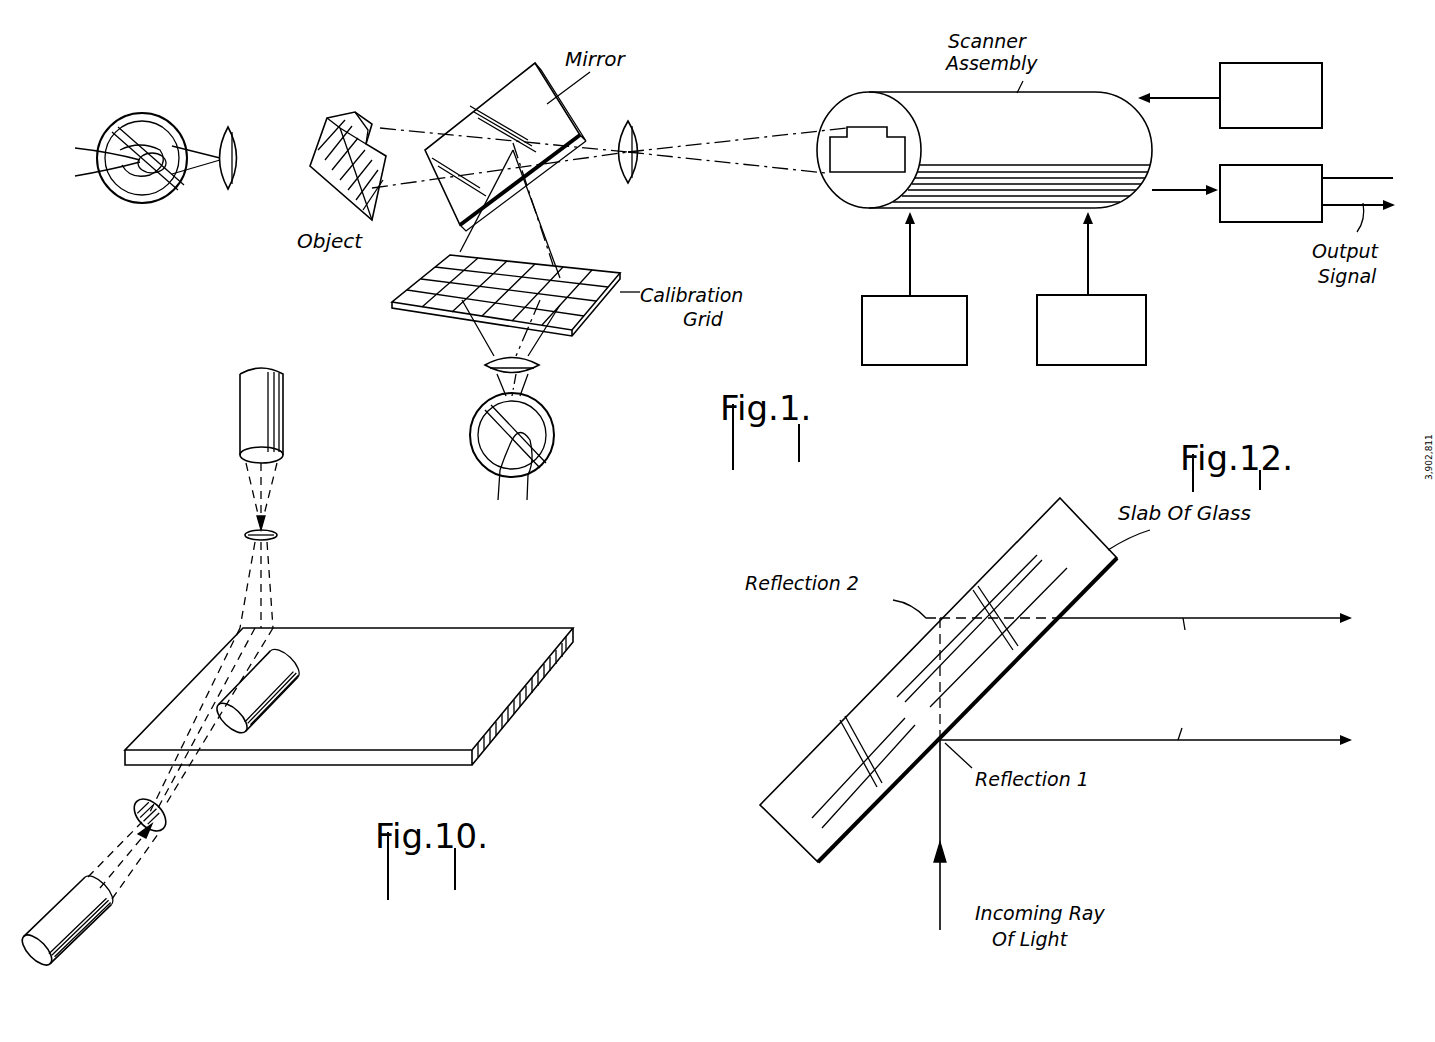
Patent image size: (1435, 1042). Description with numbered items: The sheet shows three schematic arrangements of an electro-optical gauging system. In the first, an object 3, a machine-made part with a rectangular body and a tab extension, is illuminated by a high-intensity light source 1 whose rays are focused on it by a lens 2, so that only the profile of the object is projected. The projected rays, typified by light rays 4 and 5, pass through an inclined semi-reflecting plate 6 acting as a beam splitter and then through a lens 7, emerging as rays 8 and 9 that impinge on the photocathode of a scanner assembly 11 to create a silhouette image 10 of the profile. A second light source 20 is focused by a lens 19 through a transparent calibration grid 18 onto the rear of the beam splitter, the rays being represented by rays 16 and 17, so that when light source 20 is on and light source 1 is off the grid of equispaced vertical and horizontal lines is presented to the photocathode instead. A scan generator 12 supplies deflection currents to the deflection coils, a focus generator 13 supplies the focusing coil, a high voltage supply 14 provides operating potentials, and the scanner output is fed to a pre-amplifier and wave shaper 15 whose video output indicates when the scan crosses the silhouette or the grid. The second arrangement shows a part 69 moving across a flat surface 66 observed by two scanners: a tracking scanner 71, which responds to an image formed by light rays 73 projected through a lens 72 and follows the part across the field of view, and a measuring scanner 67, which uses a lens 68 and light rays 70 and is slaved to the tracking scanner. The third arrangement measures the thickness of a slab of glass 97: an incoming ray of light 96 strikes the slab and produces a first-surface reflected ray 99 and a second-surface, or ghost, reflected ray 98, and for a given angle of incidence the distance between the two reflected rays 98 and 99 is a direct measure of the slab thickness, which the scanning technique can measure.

In FIG. 1, the light source 1 is at (147, 203).
In FIG. 1, the lens 2 is at (233, 142).
In FIG. 1, the object 3 is at (360, 121).
In FIG. 1, the light ray 4 is at (410, 131).
In FIG. 1, the light ray 5 is at (395, 190).
In FIG. 1, the semi-reflecting plate 6 is at (515, 84).
In FIG. 1, the lens 7 is at (640, 140).
In FIG. 1, the light ray 8 is at (790, 138).
In FIG. 1, the light ray 9 is at (776, 175).
In FIG. 1, the image 10 is at (868, 173).
In FIG. 1, the scanner assembly 11 is at (1105, 95).
In FIG. 1, the scan generator 12 is at (962, 303).
In FIG. 1, the focus generator 13 is at (1147, 360).
In FIG. 1, the high voltage supply 14 is at (1322, 76).
In FIG. 1, the pre-amplifier and wave shaper 15 is at (1220, 220).
In FIG. 1, the light ray 16 is at (462, 236).
In FIG. 1, the light ray 17 is at (548, 240).
In FIG. 1, the calibration grid 18 is at (620, 283).
In FIG. 1, the lens 19 is at (482, 370).
In FIG. 1, the second light source 20 is at (472, 448).
In FIG. 10, the flat surface 66 is at (462, 628).
In FIG. 10, the scanner 67 is at (285, 452).
In FIG. 10, the lens 68 is at (277, 534).
In FIG. 10, the part 69 is at (300, 673).
In FIG. 10, the light rays 70 is at (273, 590).
In FIG. 10, the scanner 71 is at (80, 923).
In FIG. 10, the lens 72 is at (170, 820).
In FIG. 10, the light rays 73 is at (118, 875).
In FIG. 12, the incoming ray of light 96 is at (942, 832).
In FIG. 12, the slab of glass 97 is at (1028, 532).
In FIG. 12, the second reflected ray 98 is at (1258, 618).
In FIG. 12, the first reflected ray 99 is at (1230, 740).